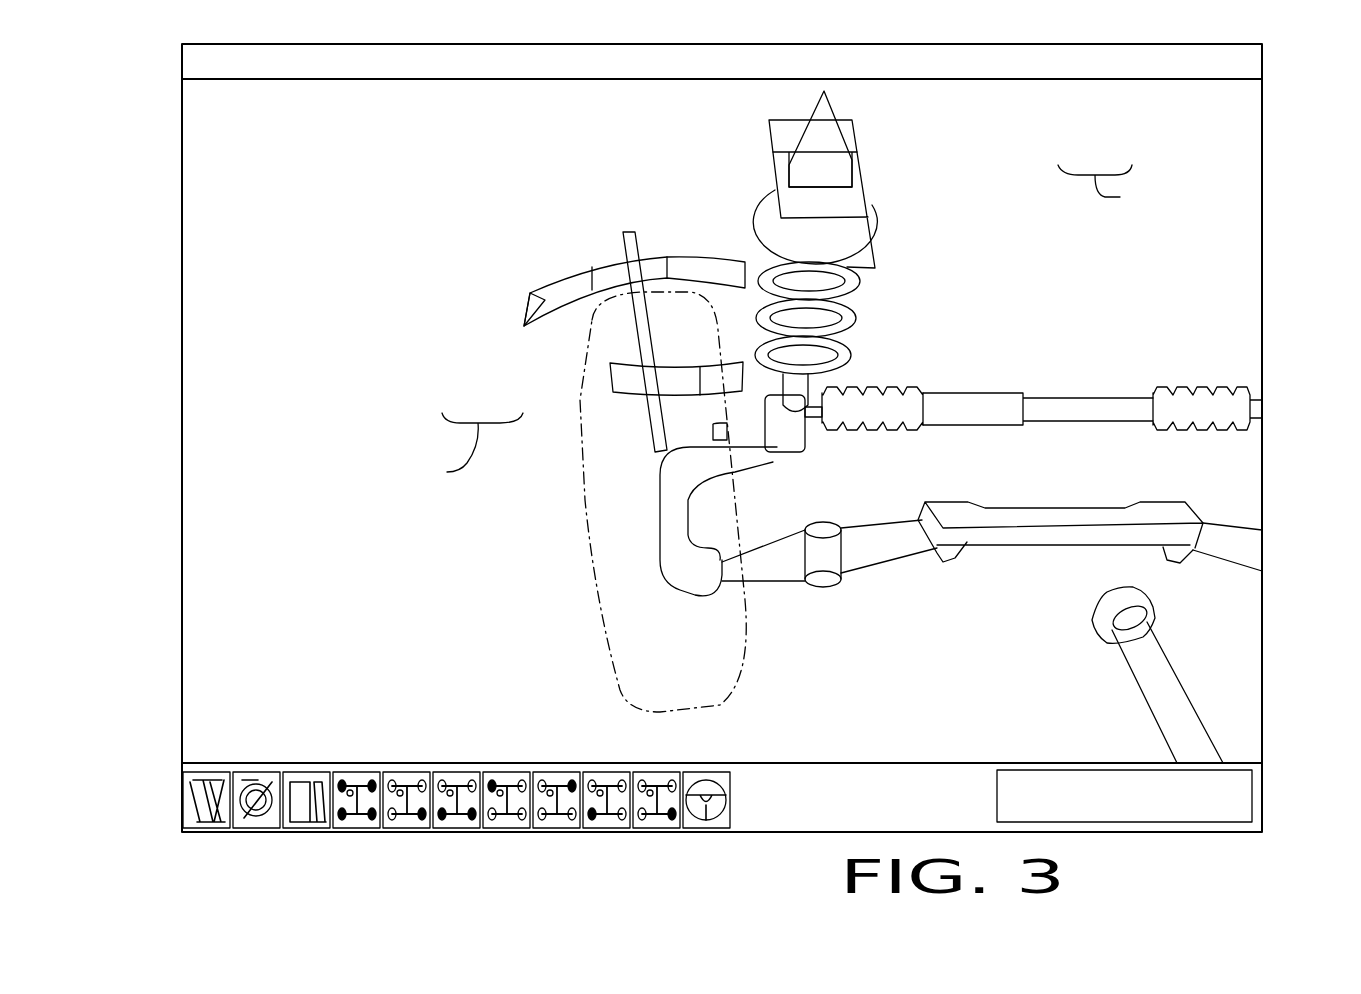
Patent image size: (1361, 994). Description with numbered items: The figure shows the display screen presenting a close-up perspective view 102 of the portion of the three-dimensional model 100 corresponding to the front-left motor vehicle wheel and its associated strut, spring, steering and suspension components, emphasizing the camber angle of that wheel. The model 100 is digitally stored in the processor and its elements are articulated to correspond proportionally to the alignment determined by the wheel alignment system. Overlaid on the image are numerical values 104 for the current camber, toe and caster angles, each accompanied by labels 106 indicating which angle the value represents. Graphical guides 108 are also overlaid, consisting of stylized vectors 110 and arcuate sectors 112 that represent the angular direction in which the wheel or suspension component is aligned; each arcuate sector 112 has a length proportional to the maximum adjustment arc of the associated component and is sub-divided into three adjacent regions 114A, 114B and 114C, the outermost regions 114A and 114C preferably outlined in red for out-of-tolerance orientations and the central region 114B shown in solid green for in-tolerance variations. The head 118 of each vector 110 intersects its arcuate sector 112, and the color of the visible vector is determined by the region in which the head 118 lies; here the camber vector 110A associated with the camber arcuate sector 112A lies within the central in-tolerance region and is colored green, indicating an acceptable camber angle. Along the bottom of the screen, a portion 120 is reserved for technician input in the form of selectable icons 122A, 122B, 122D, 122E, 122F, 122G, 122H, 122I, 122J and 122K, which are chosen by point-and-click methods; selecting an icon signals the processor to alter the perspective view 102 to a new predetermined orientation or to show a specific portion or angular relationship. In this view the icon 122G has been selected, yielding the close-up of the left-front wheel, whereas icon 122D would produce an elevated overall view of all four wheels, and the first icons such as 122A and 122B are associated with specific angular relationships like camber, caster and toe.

The three-dimensional model 100 is at (1222, 565).
The perspective view 102 is at (1118, 290).
The numerical values 104 is at (658, 178).
The labels 106 is at (562, 180).
The graphical guides 108 is at (560, 275).
The stylized vector 110 is at (852, 132).
The camber vector 110A is at (627, 292).
The arcuate sector 112 is at (860, 158).
The camber arcuate sector 112A is at (525, 305).
The outermost region 114A is at (542, 293).
The central region 114B is at (600, 275).
The outermost region 114C is at (706, 272).
The vector head 118 is at (832, 112).
The portion of the display screen 120 is at (168, 800).
The selectable icon 122A is at (215, 829).
The selectable icon 122B is at (262, 829).
The selectable icon 122D is at (360, 829).
The selectable icon 122E is at (307, 829).
The selectable icon 122F is at (447, 829).
The selectable icon 122G is at (500, 829).
The selectable icon 122H is at (555, 829).
The selectable icon 122I is at (600, 829).
The selectable icon 122J is at (653, 829).
The selectable icon 122K is at (693, 829).